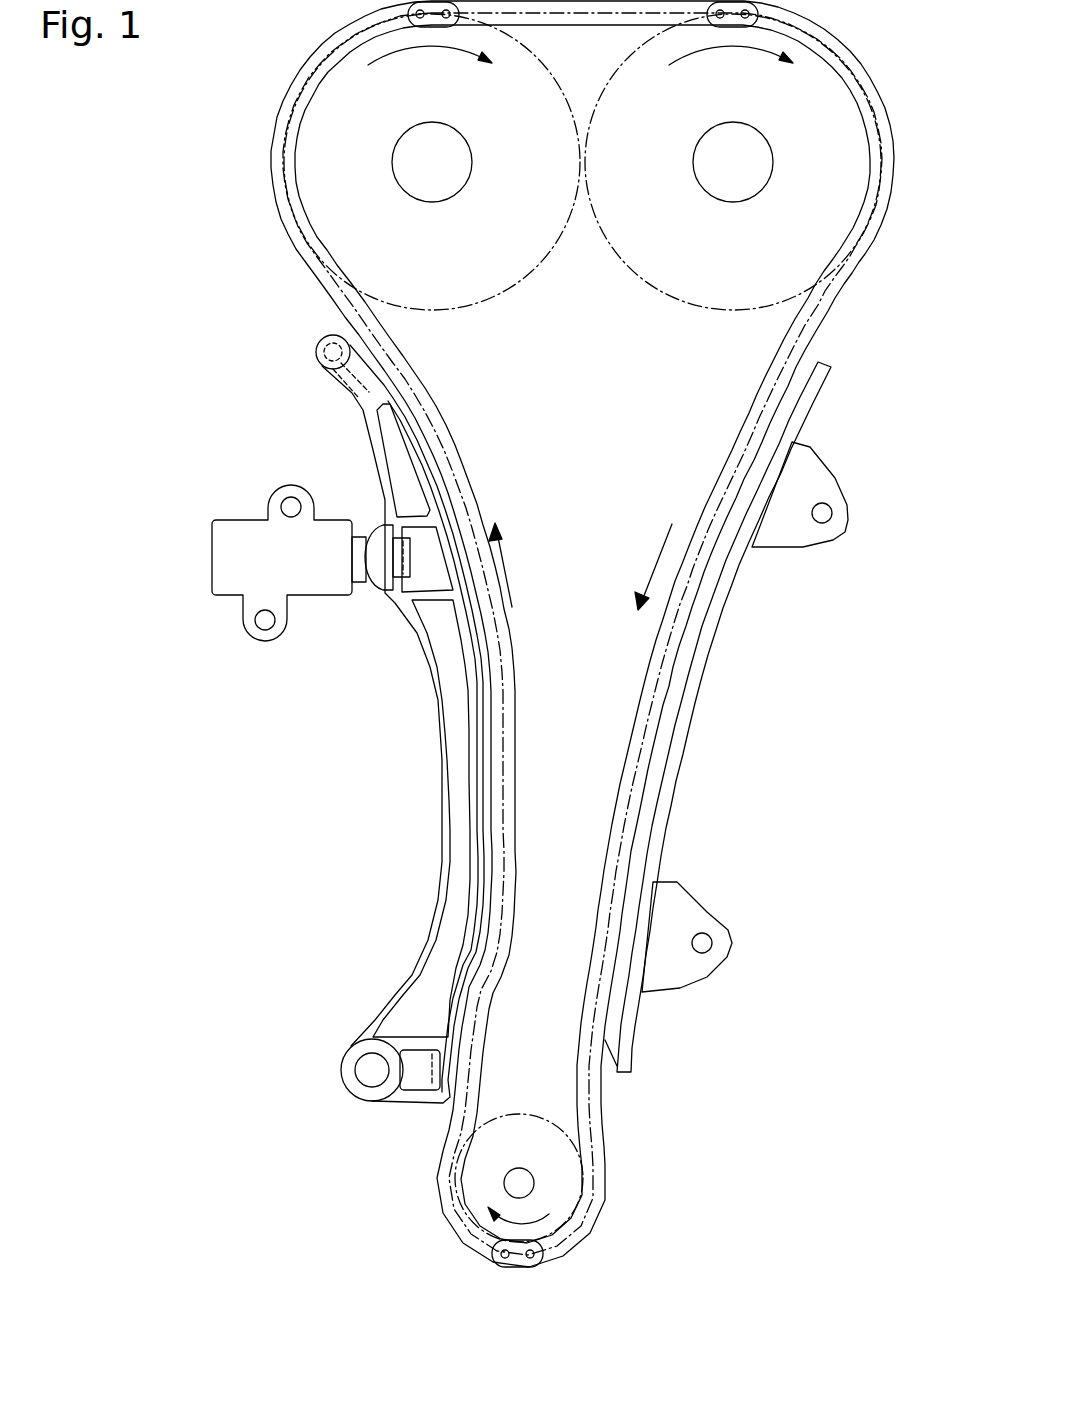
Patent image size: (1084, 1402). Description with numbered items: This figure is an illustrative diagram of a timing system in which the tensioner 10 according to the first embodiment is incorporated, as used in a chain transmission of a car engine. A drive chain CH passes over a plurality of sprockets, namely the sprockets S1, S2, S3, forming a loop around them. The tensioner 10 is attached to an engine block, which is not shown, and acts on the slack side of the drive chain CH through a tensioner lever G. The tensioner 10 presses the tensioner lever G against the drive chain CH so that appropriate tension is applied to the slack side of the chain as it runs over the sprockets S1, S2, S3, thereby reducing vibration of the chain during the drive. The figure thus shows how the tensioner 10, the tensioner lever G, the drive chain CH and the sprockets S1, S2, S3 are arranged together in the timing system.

The sprocket S1 is at (555, 1183).
The sprocket S2 is at (334, 153).
The sprocket S3 is at (812, 143).
The drive chain CH is at (813, 306).
The tensioner lever G is at (444, 940).
The tensioner 10 is at (257, 543).